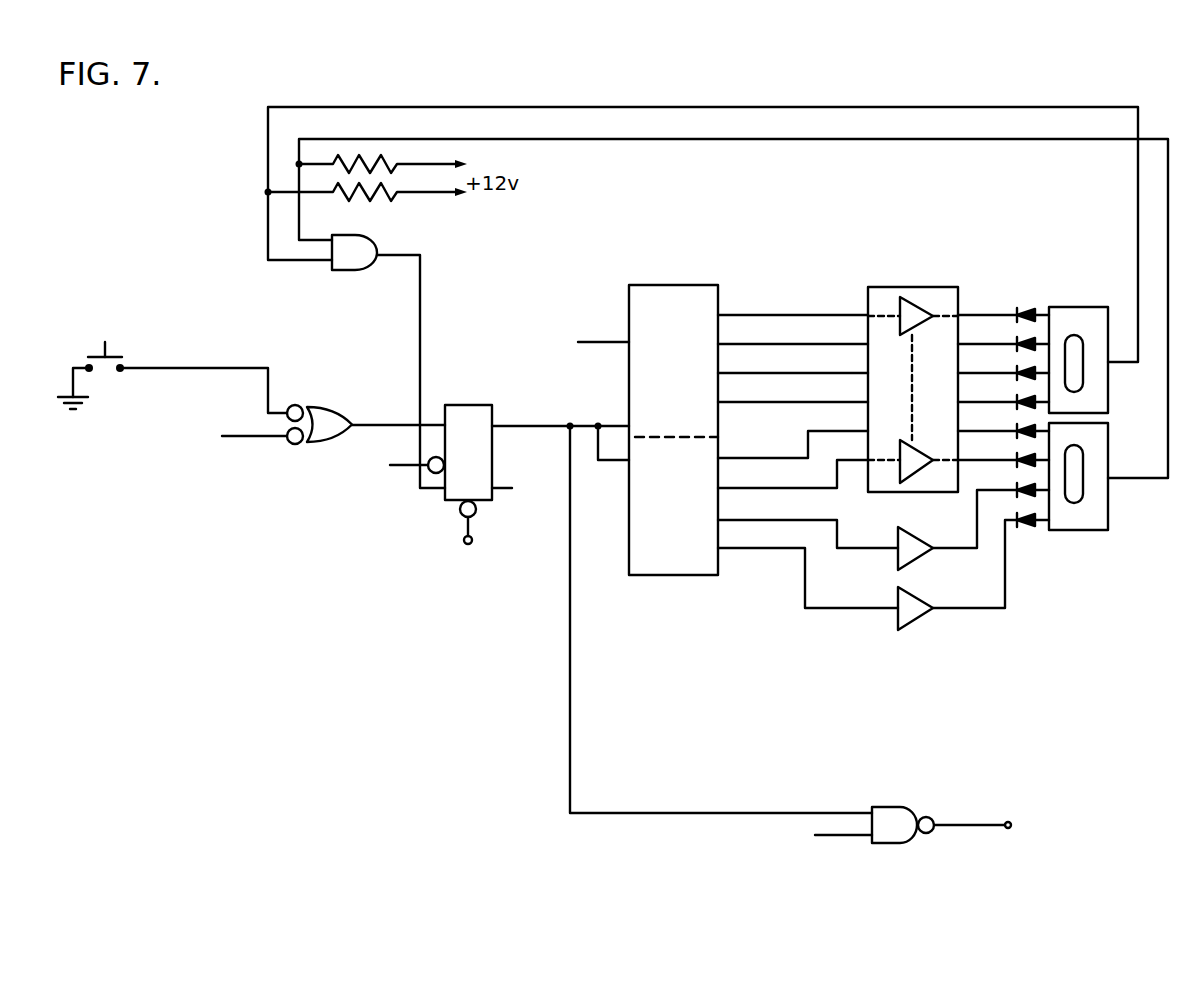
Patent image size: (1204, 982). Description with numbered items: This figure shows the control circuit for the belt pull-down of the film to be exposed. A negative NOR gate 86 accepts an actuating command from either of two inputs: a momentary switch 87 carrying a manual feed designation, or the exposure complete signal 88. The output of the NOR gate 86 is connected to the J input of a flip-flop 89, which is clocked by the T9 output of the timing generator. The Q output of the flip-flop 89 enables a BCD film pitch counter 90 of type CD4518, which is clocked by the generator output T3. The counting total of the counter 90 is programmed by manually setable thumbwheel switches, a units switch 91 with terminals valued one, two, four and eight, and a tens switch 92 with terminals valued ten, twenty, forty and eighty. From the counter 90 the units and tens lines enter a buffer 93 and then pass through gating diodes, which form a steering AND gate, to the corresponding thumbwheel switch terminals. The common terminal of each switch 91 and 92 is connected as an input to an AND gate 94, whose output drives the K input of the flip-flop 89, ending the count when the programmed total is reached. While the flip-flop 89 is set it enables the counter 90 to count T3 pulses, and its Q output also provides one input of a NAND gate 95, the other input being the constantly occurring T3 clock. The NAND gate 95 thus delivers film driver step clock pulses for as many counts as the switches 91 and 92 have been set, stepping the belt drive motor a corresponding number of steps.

The negative NOR gate 86 is at (344, 399).
The momentary switch 87 is at (117, 348).
The exposure complete signal 88 is at (233, 429).
The flip-flop 89 is at (476, 398).
The BCD film pitch counter 90 is at (658, 284).
The units switch 91 is at (1108, 346).
The tens switch 92 is at (1108, 462).
The buffer 93 is at (907, 286).
The AND gate 94 is at (374, 246).
The NAND gate 95 is at (906, 807).